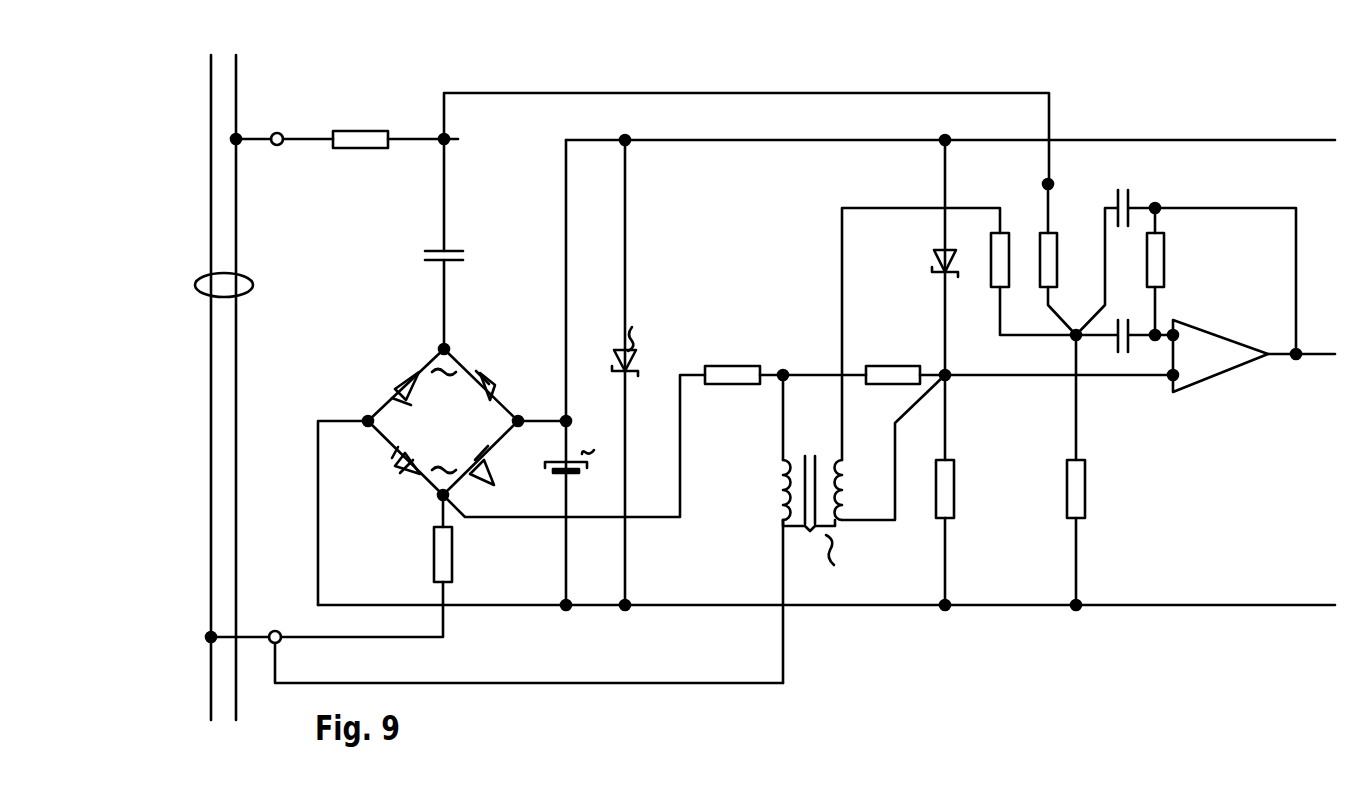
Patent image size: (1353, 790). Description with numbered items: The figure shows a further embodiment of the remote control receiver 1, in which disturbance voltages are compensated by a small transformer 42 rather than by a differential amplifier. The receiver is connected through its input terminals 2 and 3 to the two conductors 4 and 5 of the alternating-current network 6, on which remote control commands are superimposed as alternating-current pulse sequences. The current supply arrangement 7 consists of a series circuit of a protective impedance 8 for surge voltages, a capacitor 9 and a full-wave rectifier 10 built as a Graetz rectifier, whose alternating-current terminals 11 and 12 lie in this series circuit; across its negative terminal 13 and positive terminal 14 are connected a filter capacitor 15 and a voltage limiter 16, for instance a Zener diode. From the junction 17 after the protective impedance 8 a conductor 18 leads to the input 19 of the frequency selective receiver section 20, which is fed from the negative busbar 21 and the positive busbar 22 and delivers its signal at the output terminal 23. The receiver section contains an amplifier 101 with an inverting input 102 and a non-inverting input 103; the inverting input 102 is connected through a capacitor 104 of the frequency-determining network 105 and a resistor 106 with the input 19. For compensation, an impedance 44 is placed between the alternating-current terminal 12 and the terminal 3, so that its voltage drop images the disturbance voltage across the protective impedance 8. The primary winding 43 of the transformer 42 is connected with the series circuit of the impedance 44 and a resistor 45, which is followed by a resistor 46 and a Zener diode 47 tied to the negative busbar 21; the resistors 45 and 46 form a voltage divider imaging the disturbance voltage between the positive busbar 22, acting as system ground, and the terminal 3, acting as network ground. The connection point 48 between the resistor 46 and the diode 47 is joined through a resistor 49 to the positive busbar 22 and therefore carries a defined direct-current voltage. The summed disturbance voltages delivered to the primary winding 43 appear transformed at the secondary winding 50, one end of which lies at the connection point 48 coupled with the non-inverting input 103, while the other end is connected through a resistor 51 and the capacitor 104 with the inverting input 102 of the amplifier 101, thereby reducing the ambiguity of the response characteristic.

The remote control receiver 1 is at (1150, 100).
The input terminal 2 is at (277, 132).
The input terminal 3 is at (275, 630).
The conductor 4 is at (238, 193).
The conductor 5 is at (212, 241).
The alternating-current network 6 is at (251, 283).
The current supply arrangement 7 is at (518, 302).
The protective impedance 8 is at (361, 149).
The capacitor 9 is at (438, 252).
The full-wave rectifier 10 is at (443, 422).
The alternating-current terminal 11 is at (449, 352).
The alternating-current terminal 12 is at (438, 498).
The negative terminal 13 is at (522, 427).
The positive terminal 14 is at (365, 417).
The filter capacitor 15 is at (553, 474).
The voltage limiter 16 is at (615, 360).
The junction 17 is at (467, 140).
The conductor 18 is at (742, 93).
The input 19 is at (1053, 184).
The frequency selective receiver section 20 is at (1232, 490).
The negative busbar 21 is at (1210, 141).
The positive busbar 22 is at (1192, 605).
The output terminal 23 is at (1298, 359).
The transformer 42 is at (854, 522).
The primary winding 43 is at (776, 477).
The impedance 44 is at (432, 545).
The resistor 45 is at (723, 365).
The resistor 46 is at (886, 365).
The Zener diode 47 is at (941, 264).
The connection point 48 is at (1056, 358).
The resistor 49 is at (955, 479).
The secondary winding 50 is at (848, 484).
The resistor 51 is at (989, 260).
The amplifier 101 is at (1236, 350).
The inverting input 102 is at (1196, 316).
The non-inverting input 103 is at (1169, 379).
The capacitor 104 is at (1117, 322).
The frequency-determining network 105 is at (1121, 291).
The resistor 106 is at (1057, 255).